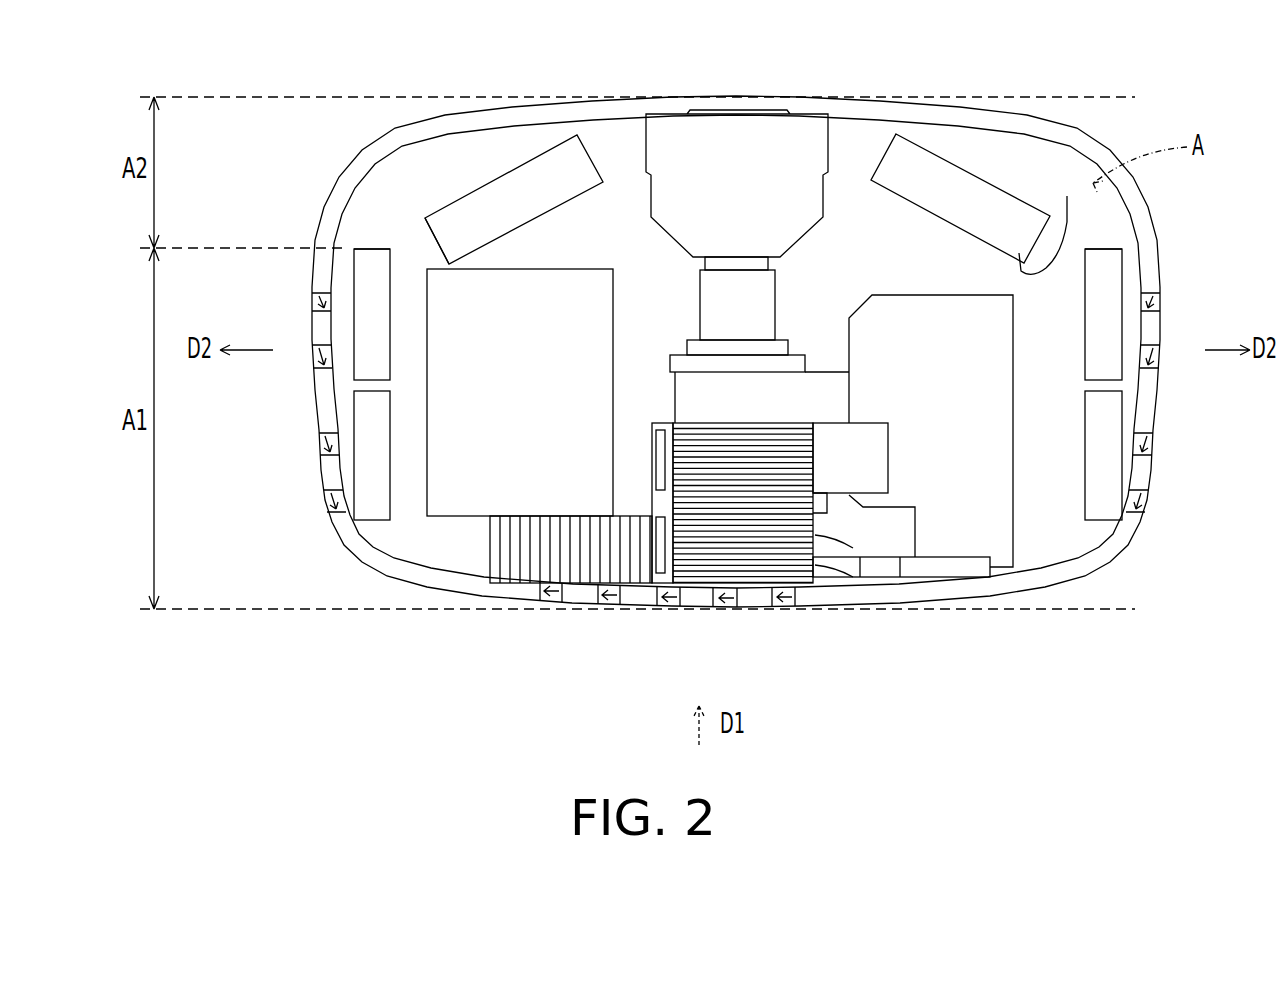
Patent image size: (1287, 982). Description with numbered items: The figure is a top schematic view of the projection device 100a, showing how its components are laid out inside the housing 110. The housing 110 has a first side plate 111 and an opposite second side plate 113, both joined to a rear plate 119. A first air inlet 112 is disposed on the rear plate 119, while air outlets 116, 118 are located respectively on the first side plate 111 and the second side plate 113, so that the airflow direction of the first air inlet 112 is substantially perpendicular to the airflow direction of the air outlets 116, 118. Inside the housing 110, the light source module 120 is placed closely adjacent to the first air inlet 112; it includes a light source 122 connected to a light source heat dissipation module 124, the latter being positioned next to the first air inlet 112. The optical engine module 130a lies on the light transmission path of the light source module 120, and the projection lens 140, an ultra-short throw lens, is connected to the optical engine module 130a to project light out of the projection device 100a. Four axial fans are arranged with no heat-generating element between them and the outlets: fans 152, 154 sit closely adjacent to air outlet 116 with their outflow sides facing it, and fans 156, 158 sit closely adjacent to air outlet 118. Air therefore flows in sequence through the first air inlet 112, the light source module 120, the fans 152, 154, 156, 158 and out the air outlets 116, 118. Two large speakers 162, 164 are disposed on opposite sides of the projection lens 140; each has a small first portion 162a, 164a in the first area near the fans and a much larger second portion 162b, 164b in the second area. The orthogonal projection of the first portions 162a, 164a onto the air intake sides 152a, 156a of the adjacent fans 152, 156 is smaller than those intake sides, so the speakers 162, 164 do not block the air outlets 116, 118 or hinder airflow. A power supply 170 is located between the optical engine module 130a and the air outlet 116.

The projection device 100a is at (1067, 696).
The housing 110 is at (741, 397).
The first side plate 111 is at (330, 230).
The second side plate 113 is at (1145, 238).
The rear plate 119 is at (858, 602).
The first air inlet 112 is at (783, 607).
The air outlet 116 is at (331, 500).
The air outlet 118 is at (1141, 500).
The light source module 120 is at (751, 500).
The light source 122 is at (957, 533).
The light source heat dissipation module 124 is at (525, 582).
The optical engine module 130a is at (688, 397).
The projection lens 140 is at (752, 142).
The fan 152 is at (372, 298).
The air intake side 152a is at (397, 276).
The fan 154 is at (378, 500).
The fan 156 is at (1105, 287).
The air intake side 156a is at (1078, 280).
The fan 158 is at (1105, 500).
The speaker 162 is at (565, 330).
The first portion 162a is at (456, 260).
The second portion 162b is at (530, 221).
The speaker 164 is at (1083, 70).
The first portion 164a is at (1067, 196).
The second portion 164b is at (963, 195).
The power supply 170 is at (460, 503).